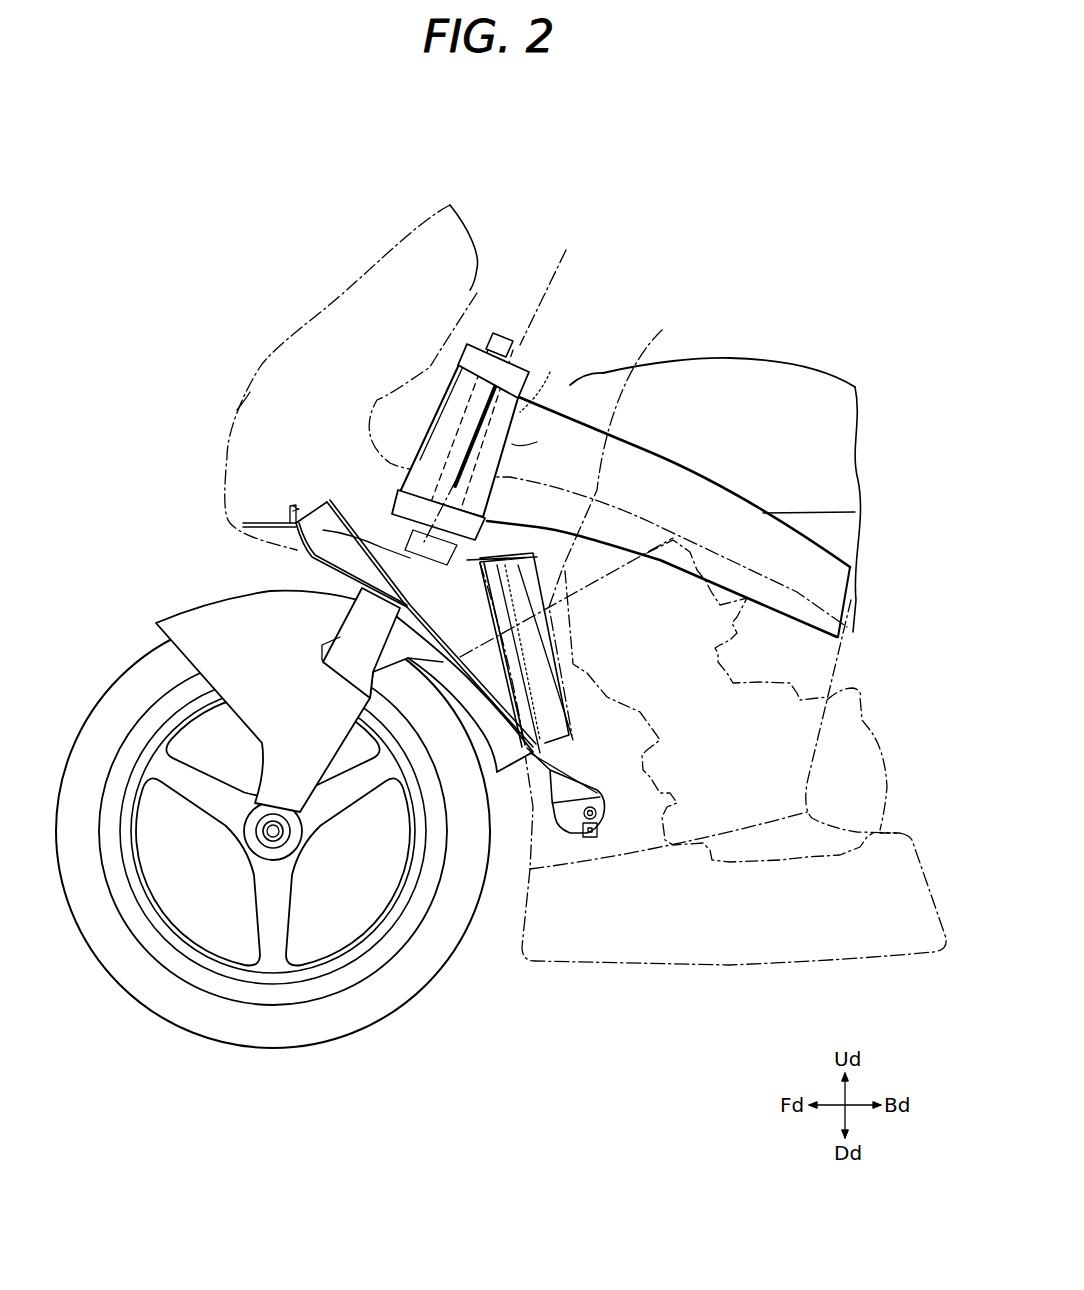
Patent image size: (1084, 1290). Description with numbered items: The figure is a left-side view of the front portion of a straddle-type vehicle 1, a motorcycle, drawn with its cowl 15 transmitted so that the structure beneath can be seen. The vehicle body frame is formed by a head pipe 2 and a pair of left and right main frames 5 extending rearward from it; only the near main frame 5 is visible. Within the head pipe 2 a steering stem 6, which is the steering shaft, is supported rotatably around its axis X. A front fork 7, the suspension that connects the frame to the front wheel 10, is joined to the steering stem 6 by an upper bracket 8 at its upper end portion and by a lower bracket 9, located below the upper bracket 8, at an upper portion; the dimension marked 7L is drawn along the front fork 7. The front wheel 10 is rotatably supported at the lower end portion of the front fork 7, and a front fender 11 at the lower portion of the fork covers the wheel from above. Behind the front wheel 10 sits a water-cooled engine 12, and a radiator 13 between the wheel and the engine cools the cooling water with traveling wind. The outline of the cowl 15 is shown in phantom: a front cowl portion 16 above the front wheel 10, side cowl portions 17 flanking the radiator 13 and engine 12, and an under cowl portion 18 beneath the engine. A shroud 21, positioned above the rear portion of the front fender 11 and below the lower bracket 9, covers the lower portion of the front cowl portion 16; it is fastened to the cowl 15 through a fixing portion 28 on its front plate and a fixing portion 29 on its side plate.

The straddle-type vehicle 1 is at (222, 232).
The head pipe 2 is at (512, 444).
The main frame 5 is at (685, 480).
The steering stem 6 is at (507, 420).
The front fork 7 is at (437, 418).
The steering stem length 7L is at (462, 378).
The upper bracket 8 is at (472, 352).
The lower bracket 9 is at (403, 500).
The front wheel 10 is at (135, 676).
The front fender 11 is at (198, 607).
The engine 12 is at (673, 613).
The radiator 13 is at (579, 530).
The cowl 15 is at (248, 348).
The front cowl portion 16 is at (237, 410).
The side cowl portion 17 is at (820, 658).
The under cowl portion 18 is at (690, 945).
The shroud 21 is at (343, 560).
The fixing portion 28 is at (290, 512).
The fixing portion 29 is at (597, 813).
The axis X is at (574, 262).